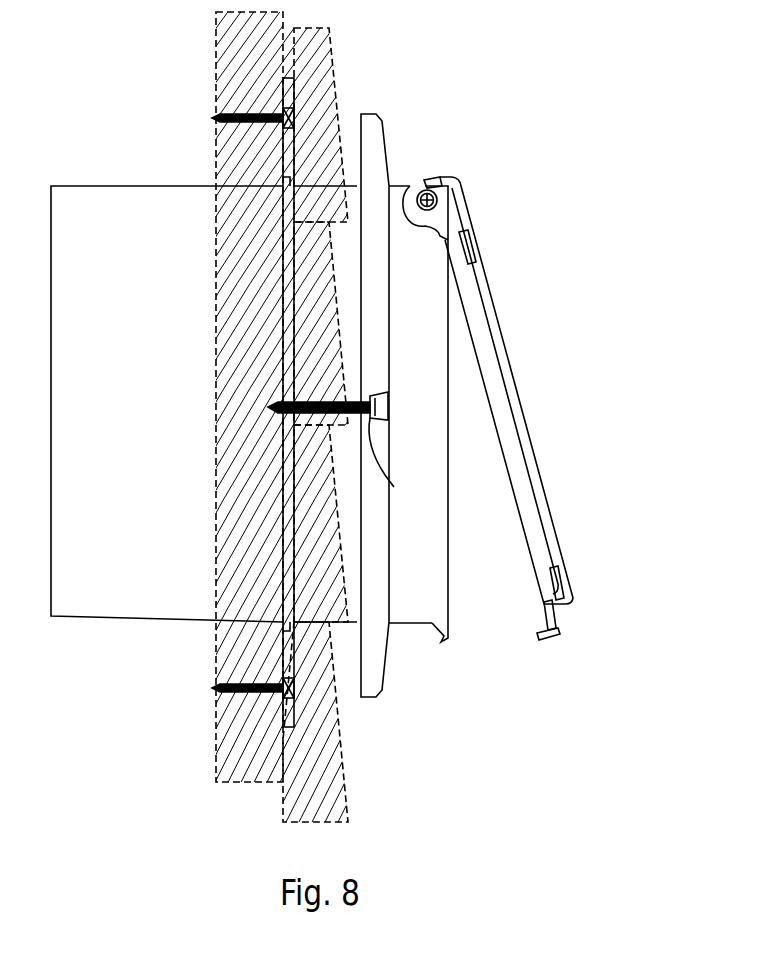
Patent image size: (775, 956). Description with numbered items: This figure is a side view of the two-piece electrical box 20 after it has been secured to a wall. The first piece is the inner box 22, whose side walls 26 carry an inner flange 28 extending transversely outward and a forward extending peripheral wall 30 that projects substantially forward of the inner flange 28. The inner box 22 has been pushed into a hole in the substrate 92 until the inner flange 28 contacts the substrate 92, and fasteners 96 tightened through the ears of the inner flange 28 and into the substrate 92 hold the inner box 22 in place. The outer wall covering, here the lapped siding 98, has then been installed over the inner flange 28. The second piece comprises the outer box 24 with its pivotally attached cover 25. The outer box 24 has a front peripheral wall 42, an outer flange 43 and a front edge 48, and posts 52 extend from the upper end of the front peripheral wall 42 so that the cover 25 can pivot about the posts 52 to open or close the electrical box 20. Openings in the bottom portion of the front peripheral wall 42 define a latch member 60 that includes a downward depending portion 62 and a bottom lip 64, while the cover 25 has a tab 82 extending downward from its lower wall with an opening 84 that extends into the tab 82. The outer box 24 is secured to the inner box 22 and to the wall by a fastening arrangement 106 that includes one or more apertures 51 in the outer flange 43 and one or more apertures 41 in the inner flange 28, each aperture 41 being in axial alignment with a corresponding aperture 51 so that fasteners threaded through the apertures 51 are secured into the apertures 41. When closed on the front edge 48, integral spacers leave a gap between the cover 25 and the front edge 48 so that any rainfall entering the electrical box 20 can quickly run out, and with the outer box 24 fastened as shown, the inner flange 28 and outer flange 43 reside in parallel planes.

The two-piece electrical box 20 is at (597, 181).
The inner box 22 is at (156, 157).
The outer box 24 is at (524, 282).
The cover 25 is at (517, 383).
The side walls 26 is at (190, 390).
The inner flange 28 is at (291, 243).
The forward extending peripheral wall 30 is at (353, 256).
The apertures 41 is at (287, 415).
The front peripheral wall 42 is at (427, 337).
The outer flange 43 is at (387, 317).
The front edge 48 is at (452, 505).
The aperture 51 is at (397, 465).
The posts 52 is at (427, 188).
The latch member 60 is at (432, 638).
The downward depending portion 62 is at (445, 628).
The bottom lip 64 is at (441, 641).
The tab 82 is at (559, 633).
The opening 84 is at (555, 615).
The substrate 92 is at (243, 68).
The fasteners 96 is at (285, 117).
The lapped siding 98 is at (307, 57).
The fastening arrangement 106 is at (380, 405).